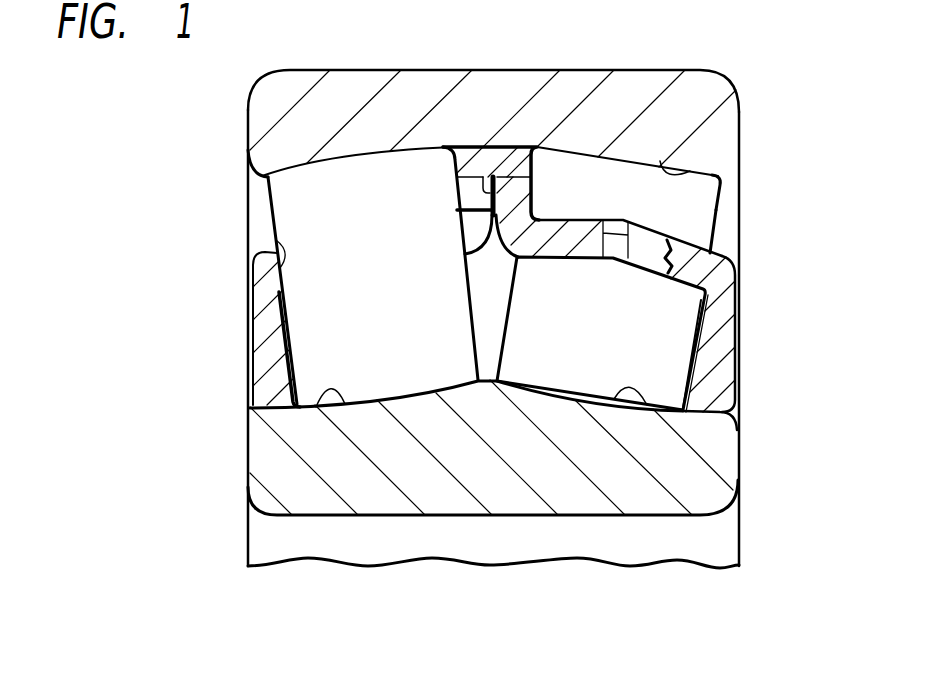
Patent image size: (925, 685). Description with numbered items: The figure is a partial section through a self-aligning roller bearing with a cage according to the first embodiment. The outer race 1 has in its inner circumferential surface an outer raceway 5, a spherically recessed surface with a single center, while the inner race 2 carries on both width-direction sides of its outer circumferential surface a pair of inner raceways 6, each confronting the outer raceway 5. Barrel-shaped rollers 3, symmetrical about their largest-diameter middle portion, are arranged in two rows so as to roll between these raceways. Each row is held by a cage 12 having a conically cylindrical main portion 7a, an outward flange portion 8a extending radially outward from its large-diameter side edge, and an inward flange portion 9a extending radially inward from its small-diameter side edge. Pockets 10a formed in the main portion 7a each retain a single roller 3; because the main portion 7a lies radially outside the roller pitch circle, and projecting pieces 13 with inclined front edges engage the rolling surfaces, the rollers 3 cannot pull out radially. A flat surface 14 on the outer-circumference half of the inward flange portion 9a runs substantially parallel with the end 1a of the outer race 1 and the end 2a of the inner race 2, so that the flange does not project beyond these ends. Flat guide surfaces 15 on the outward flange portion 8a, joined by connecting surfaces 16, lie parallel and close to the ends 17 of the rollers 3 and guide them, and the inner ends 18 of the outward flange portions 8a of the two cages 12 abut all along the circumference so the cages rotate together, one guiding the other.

The outer race 1 is at (730, 95).
The end of the outer race 1a is at (248, 118).
The inner race 2 is at (700, 508).
The end of the inner race 2a is at (248, 463).
The barrel-shaped roller 3 is at (283, 208).
The outer raceway 5 is at (687, 170).
The inner raceway 6 is at (330, 403).
The main portion 7a is at (712, 243).
The outward flange portion 8a is at (461, 178).
The inward flange portion 9a is at (262, 340).
The pocket 10a is at (273, 235).
The cage 12 is at (257, 267).
The projecting piece 13 is at (623, 220).
The flat surface 14 is at (258, 300).
The guide surface 15 is at (455, 200).
The connecting surface 16 is at (528, 217).
The end of the barrel-shaped roller 17 is at (470, 302).
The inner end of the outward flange portion 18 is at (487, 175).